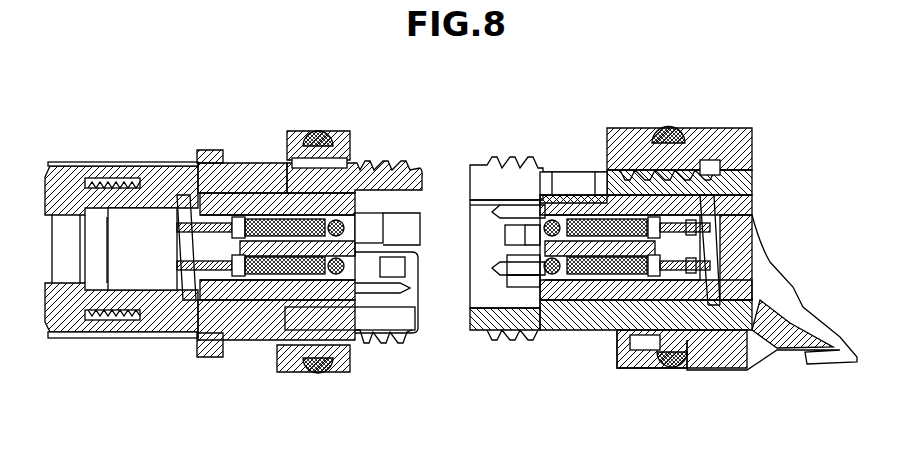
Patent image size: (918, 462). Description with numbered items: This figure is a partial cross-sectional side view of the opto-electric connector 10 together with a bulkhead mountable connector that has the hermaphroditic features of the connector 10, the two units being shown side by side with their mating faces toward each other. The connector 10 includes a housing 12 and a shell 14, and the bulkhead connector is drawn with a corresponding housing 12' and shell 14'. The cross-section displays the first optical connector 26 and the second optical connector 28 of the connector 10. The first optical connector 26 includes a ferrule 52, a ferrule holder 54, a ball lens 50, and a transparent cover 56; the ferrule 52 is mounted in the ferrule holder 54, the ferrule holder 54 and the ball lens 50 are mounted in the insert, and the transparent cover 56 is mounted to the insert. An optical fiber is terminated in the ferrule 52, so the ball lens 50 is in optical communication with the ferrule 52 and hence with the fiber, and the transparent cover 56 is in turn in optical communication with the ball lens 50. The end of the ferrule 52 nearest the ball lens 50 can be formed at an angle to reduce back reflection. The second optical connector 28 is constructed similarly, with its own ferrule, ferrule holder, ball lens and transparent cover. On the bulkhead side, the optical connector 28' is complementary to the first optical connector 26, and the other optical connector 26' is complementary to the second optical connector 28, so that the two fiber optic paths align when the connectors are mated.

The opto-electric connector 10 is at (755, 150).
The housing 12 is at (576, 148).
The second connector half 12' is at (233, 223).
The shell 14 is at (679, 225).
The coupling ring of second half 14' is at (280, 226).
The first fiber optic connector 26 is at (488, 241).
The optical connector of the bulkhead connector 26' is at (384, 324).
The second fiber optic connector 28 is at (495, 286).
The optical connector of the bulkhead connector 28' is at (397, 219).
The ball lens 50 is at (552, 219).
The ferrule 52 is at (582, 220).
The ferrule holder 54 is at (717, 248).
The transparent cover 56 is at (512, 233).